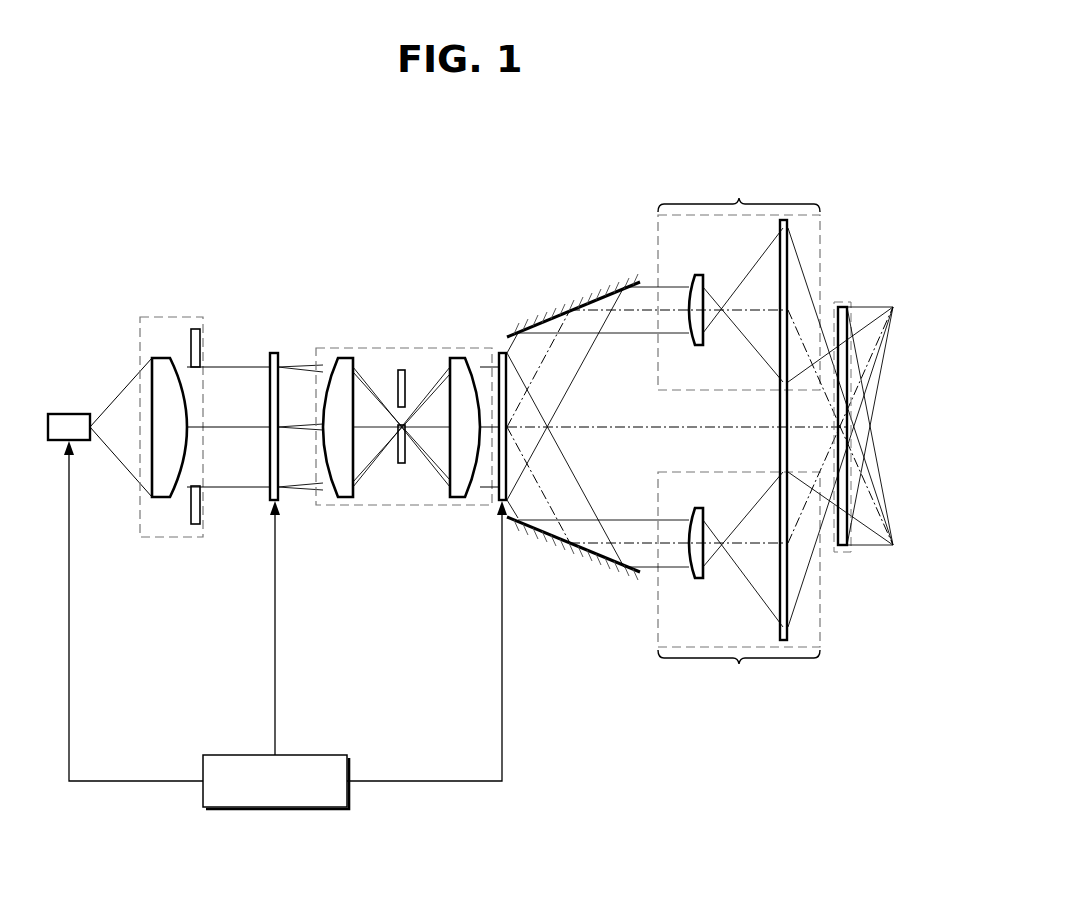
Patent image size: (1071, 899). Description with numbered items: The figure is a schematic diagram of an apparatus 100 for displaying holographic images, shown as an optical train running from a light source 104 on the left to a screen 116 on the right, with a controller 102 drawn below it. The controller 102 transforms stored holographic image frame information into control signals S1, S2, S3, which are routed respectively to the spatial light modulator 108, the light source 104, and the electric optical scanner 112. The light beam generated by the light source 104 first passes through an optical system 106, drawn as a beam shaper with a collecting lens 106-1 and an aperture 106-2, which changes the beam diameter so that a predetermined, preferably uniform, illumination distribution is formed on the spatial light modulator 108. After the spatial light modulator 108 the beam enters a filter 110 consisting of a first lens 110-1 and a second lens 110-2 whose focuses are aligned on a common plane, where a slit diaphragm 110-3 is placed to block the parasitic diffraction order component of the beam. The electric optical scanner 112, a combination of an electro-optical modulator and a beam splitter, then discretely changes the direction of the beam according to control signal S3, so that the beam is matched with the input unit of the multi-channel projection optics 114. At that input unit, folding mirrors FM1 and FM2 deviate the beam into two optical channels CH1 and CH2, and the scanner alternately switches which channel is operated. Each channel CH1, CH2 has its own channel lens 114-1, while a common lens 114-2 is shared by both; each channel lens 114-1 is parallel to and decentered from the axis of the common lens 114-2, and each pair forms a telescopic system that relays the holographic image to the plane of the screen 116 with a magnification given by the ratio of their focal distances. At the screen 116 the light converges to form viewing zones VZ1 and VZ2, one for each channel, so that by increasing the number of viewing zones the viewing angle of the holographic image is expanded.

The apparatus for displaying holographic images 100 is at (148, 206).
The controller 102 is at (276, 782).
The light source 104 is at (68, 413).
The optical system 106 is at (197, 317).
The collecting lens 106-1 is at (163, 357).
The aperture 106-2 is at (195, 525).
The spatial light modulator 108 is at (274, 353).
The filter 110 is at (349, 348).
The first lens 110-1 is at (345, 496).
The second lens 110-2 is at (460, 496).
The slit diaphragm 110-3 is at (403, 370).
The electric optical scanner 112 is at (500, 353).
The multi-channel projection optics 114 is at (658, 502).
The channel lens 114-1 is at (697, 275).
The common lens 114-2 is at (788, 582).
The screen 116 is at (843, 306).
The folding mirror FM1 is at (573, 302).
The folding mirror FM2 is at (573, 553).
The optical channel CH1 is at (739, 279).
The optical channel CH2 is at (739, 584).
The viewing zone VZ1 is at (895, 419).
The viewing zone VZ2 is at (895, 434).
The control signal S1 is at (258, 628).
The control signal S2 is at (117, 611).
The control signal S3 is at (427, 641).